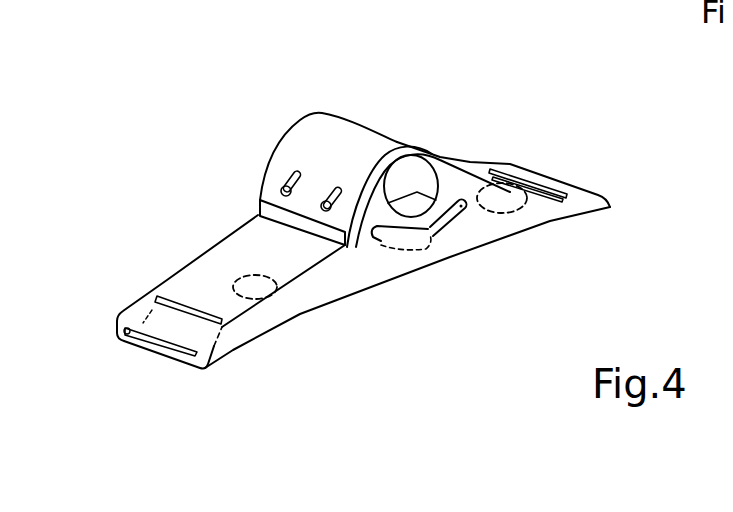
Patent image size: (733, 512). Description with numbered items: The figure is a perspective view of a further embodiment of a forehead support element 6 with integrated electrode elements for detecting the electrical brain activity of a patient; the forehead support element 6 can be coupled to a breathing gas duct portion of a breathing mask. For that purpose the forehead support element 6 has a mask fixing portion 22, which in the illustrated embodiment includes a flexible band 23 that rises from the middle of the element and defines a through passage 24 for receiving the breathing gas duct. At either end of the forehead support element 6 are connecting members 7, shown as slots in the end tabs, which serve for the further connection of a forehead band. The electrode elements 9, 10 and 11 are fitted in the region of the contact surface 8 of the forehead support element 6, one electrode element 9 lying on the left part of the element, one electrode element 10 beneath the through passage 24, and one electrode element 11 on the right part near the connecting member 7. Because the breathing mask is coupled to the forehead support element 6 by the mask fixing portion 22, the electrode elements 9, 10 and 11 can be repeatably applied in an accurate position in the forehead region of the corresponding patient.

The forehead support element 6 is at (176, 243).
The connecting members 7 is at (167, 327).
The contact surface 8 is at (300, 313).
The electrode element 9 is at (256, 284).
The electrode element 10 is at (413, 260).
The electrode element 11 is at (518, 208).
The mask fixing portion 22 is at (468, 127).
The flexible band 23 is at (317, 148).
The through passage 24 is at (411, 186).